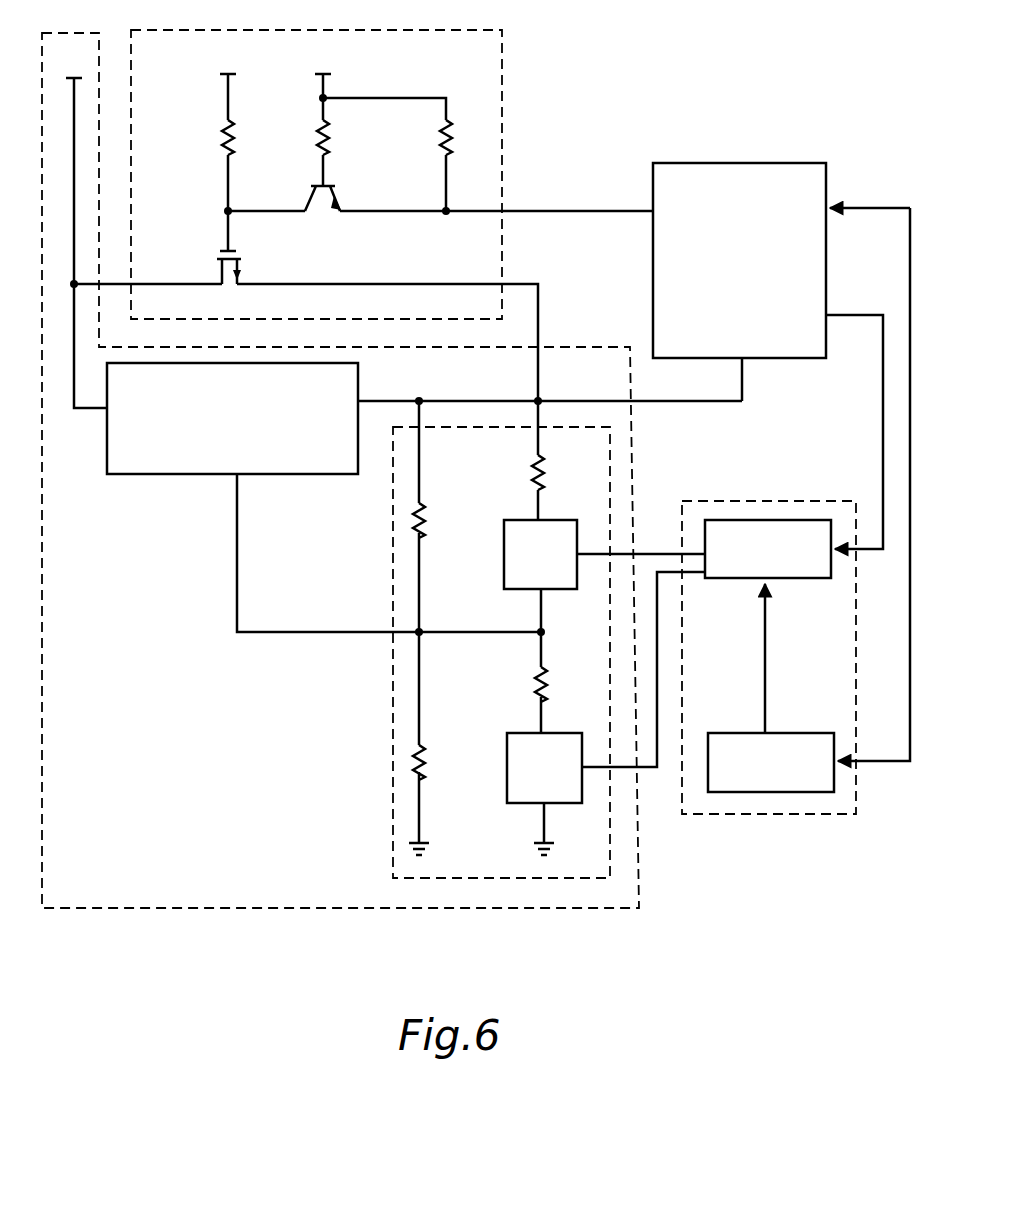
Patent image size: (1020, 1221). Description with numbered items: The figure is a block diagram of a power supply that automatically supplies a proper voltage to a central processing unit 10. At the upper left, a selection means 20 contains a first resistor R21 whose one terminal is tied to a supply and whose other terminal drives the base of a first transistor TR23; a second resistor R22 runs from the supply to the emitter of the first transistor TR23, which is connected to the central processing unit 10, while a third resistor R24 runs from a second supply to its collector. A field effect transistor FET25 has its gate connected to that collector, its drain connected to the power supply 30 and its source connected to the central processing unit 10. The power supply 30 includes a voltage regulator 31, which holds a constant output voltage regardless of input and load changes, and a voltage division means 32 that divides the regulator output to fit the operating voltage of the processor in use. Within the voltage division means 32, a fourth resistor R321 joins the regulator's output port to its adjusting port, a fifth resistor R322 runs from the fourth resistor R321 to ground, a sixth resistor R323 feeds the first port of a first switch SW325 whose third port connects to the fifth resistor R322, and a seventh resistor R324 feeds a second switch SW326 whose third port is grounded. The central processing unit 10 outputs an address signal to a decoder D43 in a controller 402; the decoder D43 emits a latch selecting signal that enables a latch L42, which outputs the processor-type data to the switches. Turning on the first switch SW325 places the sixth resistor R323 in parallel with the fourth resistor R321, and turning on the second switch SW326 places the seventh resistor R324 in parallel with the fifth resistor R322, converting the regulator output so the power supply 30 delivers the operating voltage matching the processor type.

The central processing unit 10 is at (727, 163).
The selection means 20 is at (393, 30).
The power supply 30 is at (82, 33).
The voltage regulator 31 is at (167, 474).
The voltage division means 32 is at (390, 556).
The controller 402 is at (760, 501).
The latch L42 is at (748, 578).
The decoder D43 is at (785, 733).
The first resistor R21 is at (303, 130).
The second resistor R22 is at (387, 156).
The third resistor R24 is at (207, 142).
The first transistor TR23 is at (321, 215).
The field effect transistor FET25 is at (229, 260).
The fourth resistor R321 is at (447, 573).
The fifth resistor R322 is at (446, 800).
The sixth resistor R323 is at (511, 460).
The seventh resistor R324 is at (512, 682).
The first switch SW325 is at (604, 562).
The second switch SW326 is at (606, 713).